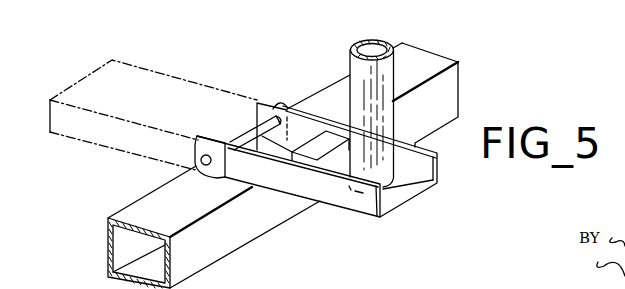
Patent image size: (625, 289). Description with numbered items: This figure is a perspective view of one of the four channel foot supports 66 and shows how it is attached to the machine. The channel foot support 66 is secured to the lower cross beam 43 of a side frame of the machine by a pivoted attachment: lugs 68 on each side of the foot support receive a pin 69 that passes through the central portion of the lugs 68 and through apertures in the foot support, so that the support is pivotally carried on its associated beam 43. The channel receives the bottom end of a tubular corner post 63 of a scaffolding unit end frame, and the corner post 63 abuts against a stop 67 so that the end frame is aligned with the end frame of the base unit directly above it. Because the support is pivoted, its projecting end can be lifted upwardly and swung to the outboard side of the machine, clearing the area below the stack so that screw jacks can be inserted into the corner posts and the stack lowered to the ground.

The lower cross beam 43 is at (140, 211).
The tubular corner post 63 is at (350, 58).
The channel foot support 66 is at (343, 208).
The stop 67 is at (318, 146).
The lug 68 is at (278, 101).
The pin 69 is at (243, 130).